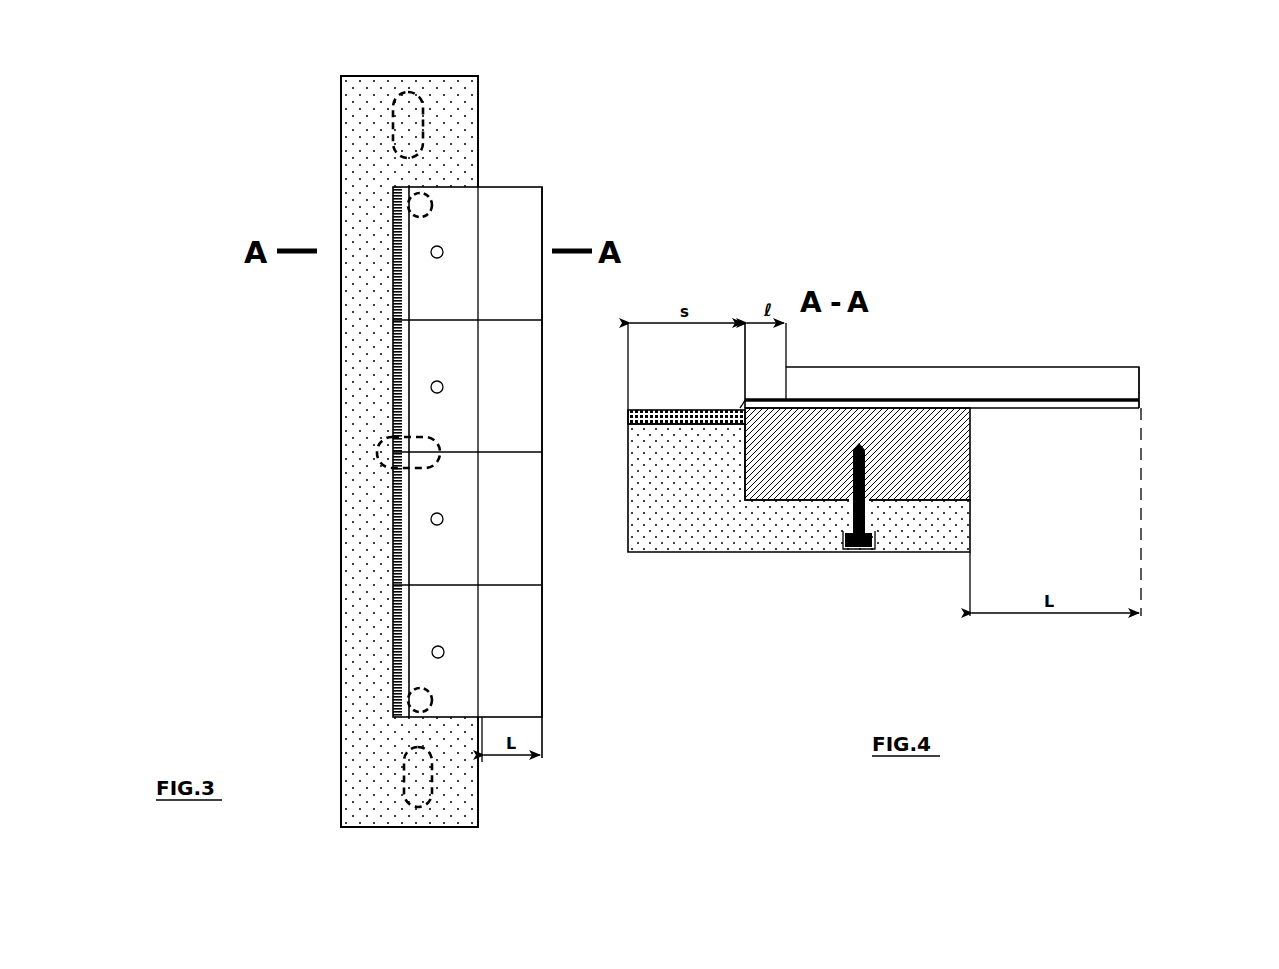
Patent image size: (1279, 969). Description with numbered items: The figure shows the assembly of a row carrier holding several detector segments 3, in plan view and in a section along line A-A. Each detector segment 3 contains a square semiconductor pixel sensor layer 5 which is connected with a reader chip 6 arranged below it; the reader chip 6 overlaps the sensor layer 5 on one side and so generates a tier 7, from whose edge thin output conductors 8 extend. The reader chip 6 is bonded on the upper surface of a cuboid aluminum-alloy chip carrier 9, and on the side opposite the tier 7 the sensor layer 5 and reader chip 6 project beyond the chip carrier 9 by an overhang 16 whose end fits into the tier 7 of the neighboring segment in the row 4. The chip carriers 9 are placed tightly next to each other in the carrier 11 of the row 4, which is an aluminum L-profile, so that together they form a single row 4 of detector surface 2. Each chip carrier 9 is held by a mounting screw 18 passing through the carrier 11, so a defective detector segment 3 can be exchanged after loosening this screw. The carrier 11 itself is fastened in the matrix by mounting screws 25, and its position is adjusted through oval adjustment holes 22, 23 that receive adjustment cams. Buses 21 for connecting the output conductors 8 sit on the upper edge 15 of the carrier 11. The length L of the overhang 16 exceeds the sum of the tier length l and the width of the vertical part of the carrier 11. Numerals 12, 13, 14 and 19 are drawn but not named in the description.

In FIG. 3, the detector surface 2 is at (542, 365).
In FIG. 3, the detector segment 3 is at (558, 219).
In FIG. 4, the detector segment 3 is at (1006, 338).
In FIG. 3, the row 4 is at (532, 163).
In FIG. 3, the sensor layer 5 is at (515, 623).
In FIG. 4, the sensor layer 5 is at (1090, 378).
In FIG. 4, the reader chip 6 is at (1070, 407).
In FIG. 3, the tier 7 is at (396, 636).
In FIG. 4, the tier 7 is at (779, 390).
In FIG. 3, the output conductors 8 is at (380, 588).
In FIG. 4, the output conductors 8 is at (741, 408).
In FIG. 4, the chip carrier 9 is at (950, 460).
In FIG. 3, the carrier 11 is at (372, 801).
In FIG. 4, the carrier 11 is at (740, 538).
In FIG. 4, the intermediate layer 12 is at (970, 428).
In FIG. 4, the concrete body 13 is at (970, 525).
In FIG. 4, the fixing plate 14 is at (895, 405).
In FIG. 4, the upper edge 15 is at (662, 427).
In FIG. 3, the overhang 16 is at (490, 186).
In FIG. 4, the overhang 16 is at (1125, 418).
In FIG. 3, the mounting screw 18 is at (445, 652).
In FIG. 4, the mounting screw 18 is at (853, 503).
In FIG. 4, the anchor bolt 19 is at (862, 551).
In FIG. 4, the buses 21 is at (673, 418).
In FIG. 3, the oval adjustment hole 22 is at (408, 112).
In FIG. 3, the oval adjustment hole 23 is at (372, 452).
In FIG. 3, the mounting screws 25 is at (393, 186).